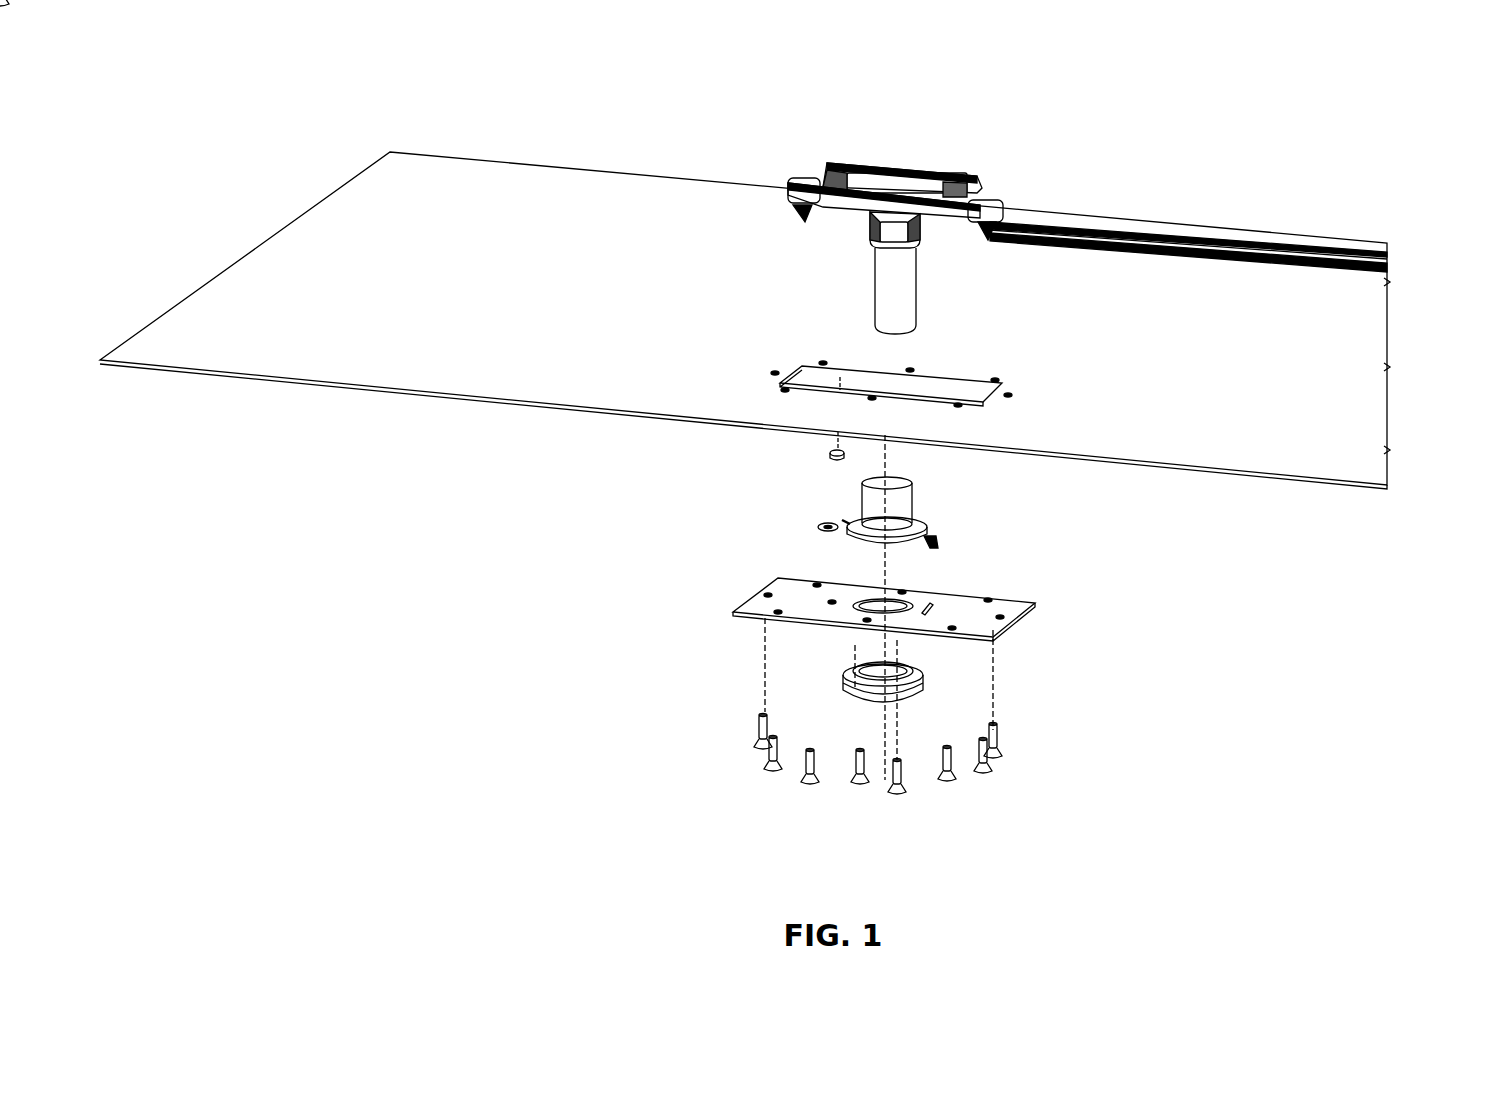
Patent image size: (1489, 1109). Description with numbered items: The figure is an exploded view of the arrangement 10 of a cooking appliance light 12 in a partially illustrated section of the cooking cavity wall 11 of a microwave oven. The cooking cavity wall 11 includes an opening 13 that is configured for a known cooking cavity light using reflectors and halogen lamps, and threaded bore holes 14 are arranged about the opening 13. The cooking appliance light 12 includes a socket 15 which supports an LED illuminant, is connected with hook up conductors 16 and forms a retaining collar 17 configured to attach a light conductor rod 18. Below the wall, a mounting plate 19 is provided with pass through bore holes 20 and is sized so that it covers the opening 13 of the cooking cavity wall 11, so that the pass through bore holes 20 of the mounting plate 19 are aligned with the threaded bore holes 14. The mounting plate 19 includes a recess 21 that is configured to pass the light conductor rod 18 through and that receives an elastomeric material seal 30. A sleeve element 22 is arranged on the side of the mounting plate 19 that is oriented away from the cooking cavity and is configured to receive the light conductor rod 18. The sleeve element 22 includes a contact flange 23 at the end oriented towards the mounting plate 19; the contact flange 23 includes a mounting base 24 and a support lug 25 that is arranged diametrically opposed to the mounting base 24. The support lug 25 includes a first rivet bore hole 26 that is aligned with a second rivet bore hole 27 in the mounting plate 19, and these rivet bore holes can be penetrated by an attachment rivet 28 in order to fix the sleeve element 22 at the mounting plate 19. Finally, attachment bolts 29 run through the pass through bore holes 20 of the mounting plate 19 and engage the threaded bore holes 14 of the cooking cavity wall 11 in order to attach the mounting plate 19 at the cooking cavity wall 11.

The arrangement 10 is at (1333, 137).
The cooking cavity wall 11 is at (389, 273).
The cooking appliance light 12 is at (905, 182).
The opening 13 is at (946, 380).
The threaded bore holes 14 is at (1010, 382).
The socket 15 is at (963, 167).
The hook up conductors 16 is at (1162, 262).
The retaining collar 17 is at (860, 232).
The light conductor rod 18 is at (928, 293).
The mounting plate 19 is at (867, 598).
The pass through bore holes 20 is at (806, 578).
The recess 21 is at (925, 584).
The sleeve element 22 is at (896, 510).
The contact flange 23 is at (832, 597).
The mounting base 24 is at (950, 541).
The support lug 25 is at (812, 510).
The first rivet bore hole 26 is at (828, 518).
The second rivet bore hole 27 is at (850, 547).
The attachment rivet 28 is at (852, 456).
The attachment bolts 29 is at (990, 783).
The elastomeric material seal 30 is at (937, 683).